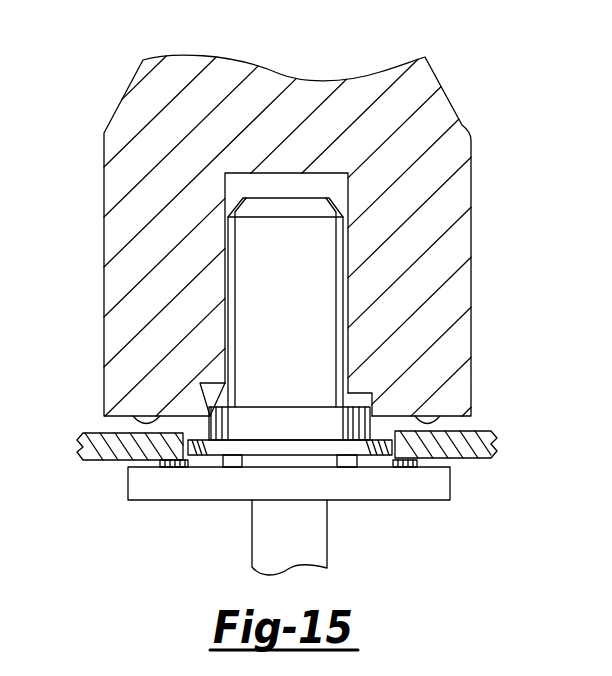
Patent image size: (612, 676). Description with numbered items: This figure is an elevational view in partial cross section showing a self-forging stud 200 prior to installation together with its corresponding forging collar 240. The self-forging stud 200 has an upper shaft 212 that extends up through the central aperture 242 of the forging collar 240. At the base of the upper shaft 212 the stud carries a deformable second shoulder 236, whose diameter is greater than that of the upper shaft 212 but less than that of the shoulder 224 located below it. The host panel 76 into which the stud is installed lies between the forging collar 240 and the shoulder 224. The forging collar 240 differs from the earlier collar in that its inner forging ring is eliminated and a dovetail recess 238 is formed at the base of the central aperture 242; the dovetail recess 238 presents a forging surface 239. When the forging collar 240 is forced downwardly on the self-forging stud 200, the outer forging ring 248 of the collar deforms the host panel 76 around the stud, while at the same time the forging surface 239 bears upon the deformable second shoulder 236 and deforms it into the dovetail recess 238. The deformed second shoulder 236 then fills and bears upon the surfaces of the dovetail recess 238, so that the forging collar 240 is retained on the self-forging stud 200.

The forging collar 240 is at (122, 97).
The upper shaft 212 is at (293, 197).
The central aperture 242 is at (350, 193).
The forging surface 239 is at (217, 383).
The dovetail recess 238 is at (377, 375).
The second shoulder 236 is at (373, 397).
The outer forging ring 248 is at (150, 423).
The host panel 76 is at (113, 461).
The shoulder 224 is at (392, 449).
The self-forging stud 200 is at (328, 540).